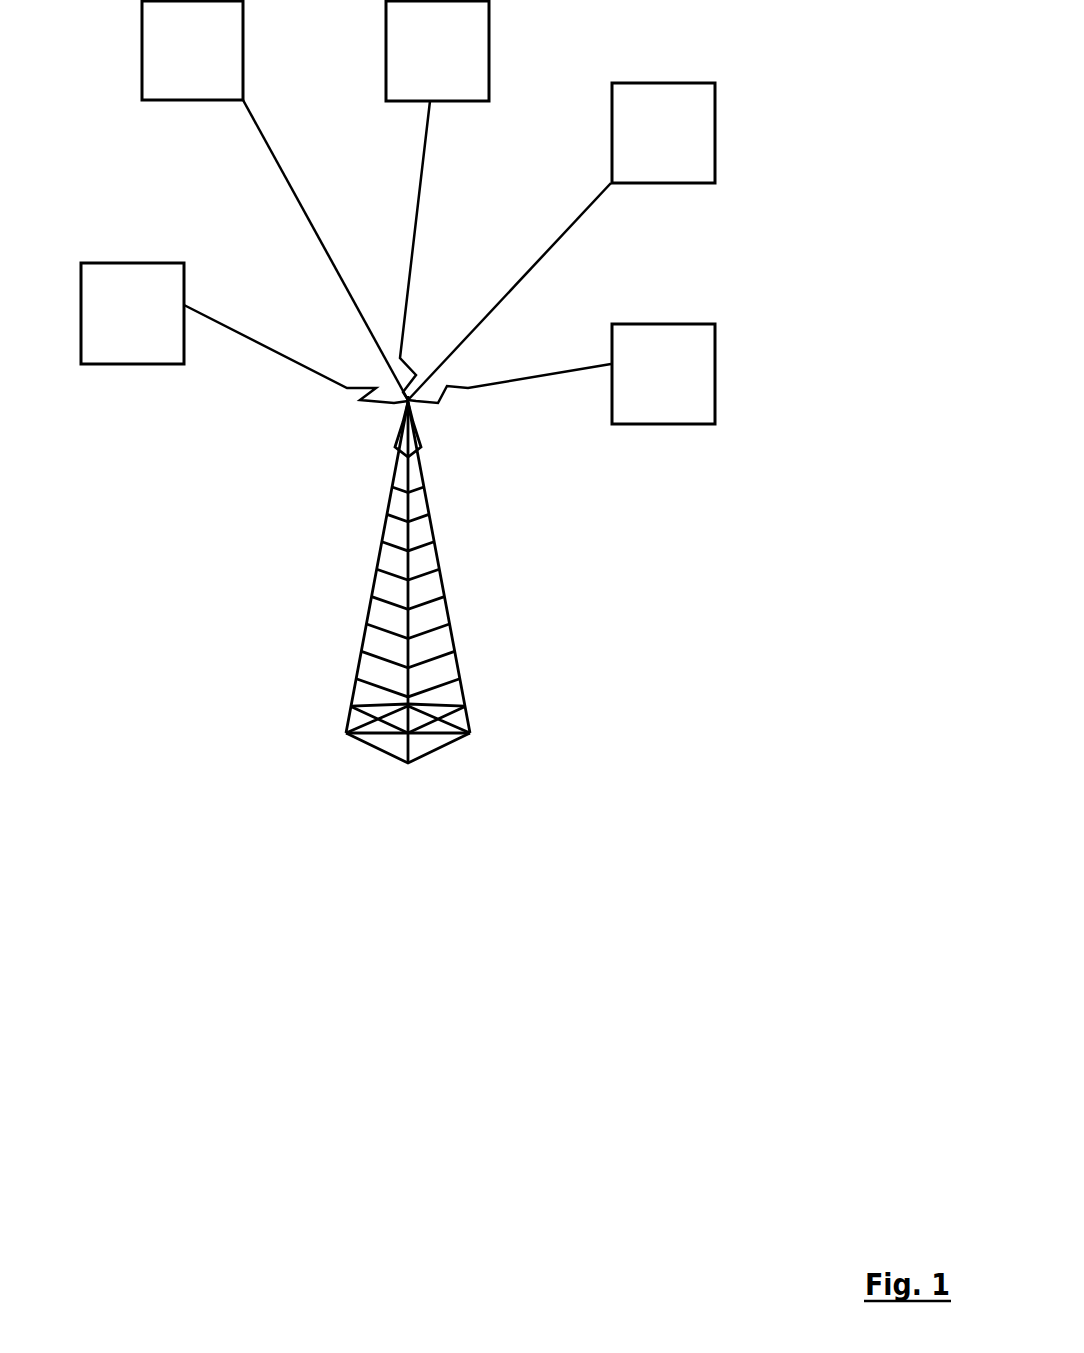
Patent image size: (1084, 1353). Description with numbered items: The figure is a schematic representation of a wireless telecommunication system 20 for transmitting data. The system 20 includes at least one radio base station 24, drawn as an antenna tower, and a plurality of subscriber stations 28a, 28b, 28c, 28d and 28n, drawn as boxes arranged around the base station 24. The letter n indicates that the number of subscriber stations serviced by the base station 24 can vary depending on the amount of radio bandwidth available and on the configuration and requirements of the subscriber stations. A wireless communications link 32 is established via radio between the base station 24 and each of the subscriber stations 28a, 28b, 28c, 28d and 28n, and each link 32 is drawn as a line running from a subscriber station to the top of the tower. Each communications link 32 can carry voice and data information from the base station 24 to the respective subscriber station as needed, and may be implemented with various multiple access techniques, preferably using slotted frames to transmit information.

The wireless telecommunication system 20 is at (128, 809).
The radio base station 24 is at (408, 598).
The subscriber station 28a is at (132, 313).
The subscriber station 28b is at (192, 50).
The subscriber station 28c is at (437, 51).
The subscriber station 28d is at (663, 133).
The subscriber station 28n is at (663, 374).
The wireless communications link 32 is at (397, 261).